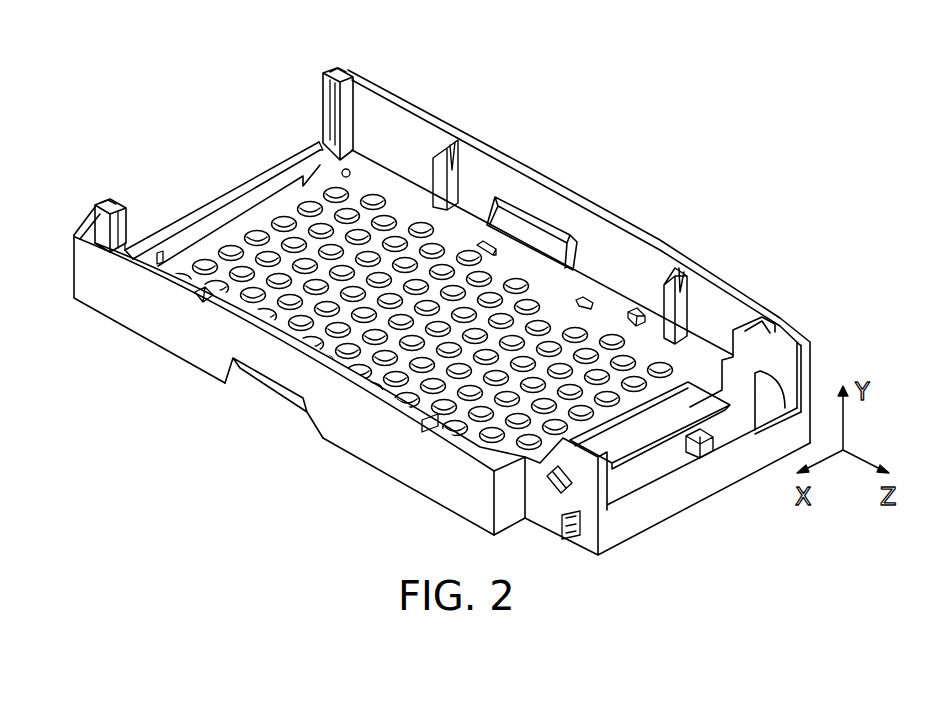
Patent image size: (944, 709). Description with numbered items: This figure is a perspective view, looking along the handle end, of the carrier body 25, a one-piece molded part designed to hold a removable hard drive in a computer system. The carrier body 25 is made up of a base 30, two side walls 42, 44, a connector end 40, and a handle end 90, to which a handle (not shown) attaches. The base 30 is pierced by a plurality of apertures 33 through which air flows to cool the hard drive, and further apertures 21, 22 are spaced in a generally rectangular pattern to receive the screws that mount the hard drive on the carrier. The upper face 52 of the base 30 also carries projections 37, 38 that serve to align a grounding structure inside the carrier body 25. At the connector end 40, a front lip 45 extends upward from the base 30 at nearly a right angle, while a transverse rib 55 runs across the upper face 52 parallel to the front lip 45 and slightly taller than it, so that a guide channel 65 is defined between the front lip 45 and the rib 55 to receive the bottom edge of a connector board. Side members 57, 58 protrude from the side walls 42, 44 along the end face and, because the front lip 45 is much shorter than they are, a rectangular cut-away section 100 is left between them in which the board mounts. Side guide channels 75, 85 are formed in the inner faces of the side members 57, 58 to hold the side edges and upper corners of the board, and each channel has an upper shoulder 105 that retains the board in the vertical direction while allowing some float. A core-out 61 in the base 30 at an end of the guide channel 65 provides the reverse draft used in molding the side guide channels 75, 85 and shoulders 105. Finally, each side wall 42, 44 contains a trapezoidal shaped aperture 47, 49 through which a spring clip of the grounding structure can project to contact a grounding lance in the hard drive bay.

The carrier body 25 is at (585, 167).
The side wall 44 is at (178, 330).
The trapezoidal shaped aperture 47 is at (263, 404).
The connector end 40 is at (61, 270).
The guide channel 65 is at (142, 268).
The side guide channel 85 is at (112, 205).
The side member 58 is at (119, 229).
The upper shoulder 105 is at (105, 203).
The rectangular cut-away section 100 is at (174, 196).
The front lip 45 is at (220, 197).
The rib 55 is at (277, 193).
The side member 57 is at (323, 93).
The side guide channel 75 is at (337, 115).
The projection 37 is at (320, 144).
The core-out 61 is at (352, 175).
The side wall 42 is at (397, 118).
The base 30 is at (400, 207).
The upper face 52 is at (453, 230).
The aperture 21 is at (492, 254).
The trapezoidal shaped aperture 49 is at (576, 301).
The aperture 22 is at (589, 301).
The projection 38 is at (675, 292).
The handle end 90 is at (824, 321).
The apertures 33 is at (452, 430).